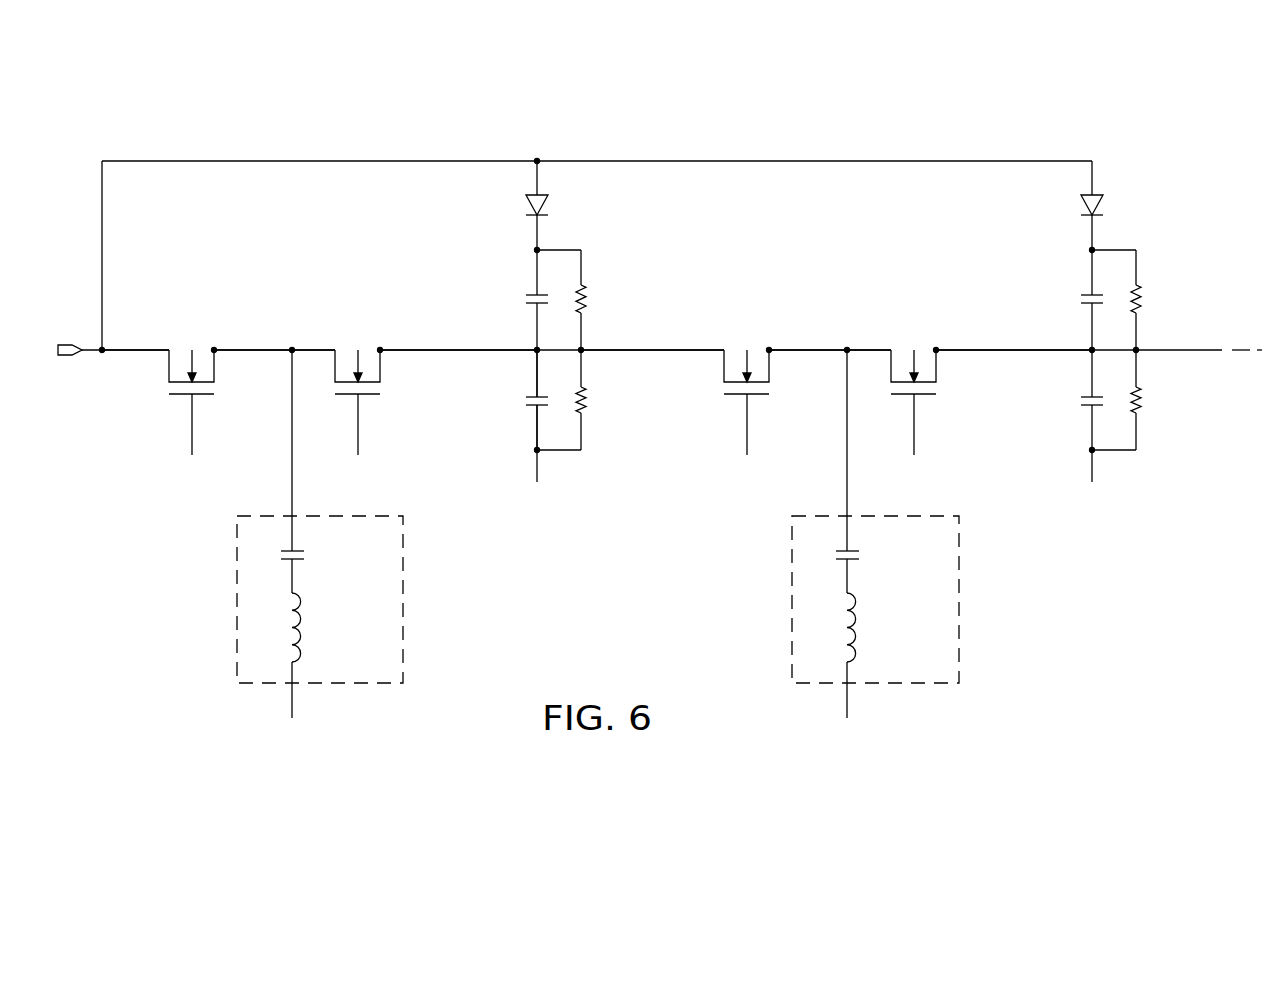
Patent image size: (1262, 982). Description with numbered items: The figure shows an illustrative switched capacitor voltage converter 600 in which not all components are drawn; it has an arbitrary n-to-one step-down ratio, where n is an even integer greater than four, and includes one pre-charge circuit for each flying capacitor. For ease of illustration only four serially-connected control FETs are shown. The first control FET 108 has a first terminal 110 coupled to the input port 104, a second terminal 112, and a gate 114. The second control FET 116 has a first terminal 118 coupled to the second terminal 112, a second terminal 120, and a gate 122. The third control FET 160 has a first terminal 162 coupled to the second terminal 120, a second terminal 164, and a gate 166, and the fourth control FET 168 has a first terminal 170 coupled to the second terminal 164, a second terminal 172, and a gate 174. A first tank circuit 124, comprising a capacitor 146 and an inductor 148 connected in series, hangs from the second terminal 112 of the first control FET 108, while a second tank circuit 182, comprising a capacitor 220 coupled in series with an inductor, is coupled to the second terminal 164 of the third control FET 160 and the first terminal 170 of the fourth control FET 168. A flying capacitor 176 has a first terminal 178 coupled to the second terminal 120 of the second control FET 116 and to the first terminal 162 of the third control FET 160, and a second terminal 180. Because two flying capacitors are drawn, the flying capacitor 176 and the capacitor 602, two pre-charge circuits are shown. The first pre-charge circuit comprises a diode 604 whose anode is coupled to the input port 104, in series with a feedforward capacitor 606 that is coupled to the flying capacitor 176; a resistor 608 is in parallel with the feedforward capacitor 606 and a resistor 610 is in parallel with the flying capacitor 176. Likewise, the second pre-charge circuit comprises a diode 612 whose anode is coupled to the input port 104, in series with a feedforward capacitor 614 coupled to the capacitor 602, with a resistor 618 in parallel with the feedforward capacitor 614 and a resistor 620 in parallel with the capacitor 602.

The switched capacitor voltage converter 600 is at (798, 122).
The input port 104 is at (66, 343).
The first terminal 110 is at (153, 348).
The first control FET 108 is at (178, 398).
The gate 114 is at (193, 422).
The second terminal 112 is at (230, 348).
The first terminal 118 is at (320, 348).
The second control FET 116 is at (345, 398).
The gate 122 is at (360, 422).
The second terminal 120 is at (397, 348).
The diode 604 is at (525, 207).
The feedforward capacitor 606 is at (525, 297).
The resistor 608 is at (587, 300).
The first terminal 178 is at (533, 367).
The flying capacitor 176 is at (525, 402).
The second terminal 180 is at (533, 433).
The resistor 610 is at (587, 407).
The first terminal 162 is at (710, 348).
The third control FET 160 is at (733, 398).
The gate 166 is at (748, 422).
The second terminal 164 is at (786, 348).
The first terminal 170 is at (876, 348).
The fourth control FET 168 is at (900, 398).
The gate 174 is at (915, 422).
The second terminal 172 is at (953, 348).
The diode 612 is at (1100, 207).
The feedforward capacitor 614 is at (1080, 297).
The resistor 618 is at (1142, 300).
The capacitor 602 is at (1080, 402).
The resistor 620 is at (1142, 407).
The first tank circuit 124 is at (277, 534).
The capacitor 146 is at (305, 557).
The inductor 148 is at (308, 618).
The second tank circuit 182 is at (918, 534).
The capacitor 220 is at (860, 557).